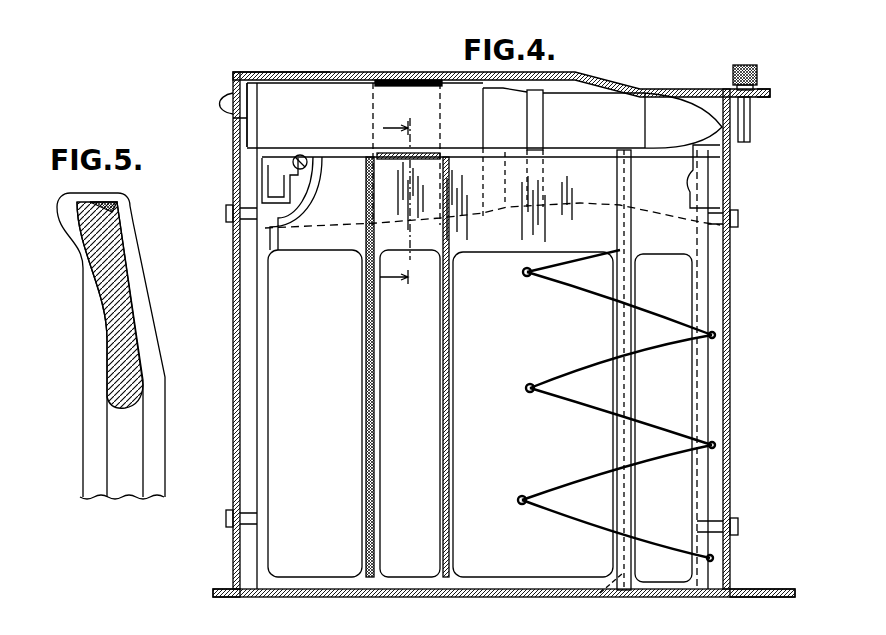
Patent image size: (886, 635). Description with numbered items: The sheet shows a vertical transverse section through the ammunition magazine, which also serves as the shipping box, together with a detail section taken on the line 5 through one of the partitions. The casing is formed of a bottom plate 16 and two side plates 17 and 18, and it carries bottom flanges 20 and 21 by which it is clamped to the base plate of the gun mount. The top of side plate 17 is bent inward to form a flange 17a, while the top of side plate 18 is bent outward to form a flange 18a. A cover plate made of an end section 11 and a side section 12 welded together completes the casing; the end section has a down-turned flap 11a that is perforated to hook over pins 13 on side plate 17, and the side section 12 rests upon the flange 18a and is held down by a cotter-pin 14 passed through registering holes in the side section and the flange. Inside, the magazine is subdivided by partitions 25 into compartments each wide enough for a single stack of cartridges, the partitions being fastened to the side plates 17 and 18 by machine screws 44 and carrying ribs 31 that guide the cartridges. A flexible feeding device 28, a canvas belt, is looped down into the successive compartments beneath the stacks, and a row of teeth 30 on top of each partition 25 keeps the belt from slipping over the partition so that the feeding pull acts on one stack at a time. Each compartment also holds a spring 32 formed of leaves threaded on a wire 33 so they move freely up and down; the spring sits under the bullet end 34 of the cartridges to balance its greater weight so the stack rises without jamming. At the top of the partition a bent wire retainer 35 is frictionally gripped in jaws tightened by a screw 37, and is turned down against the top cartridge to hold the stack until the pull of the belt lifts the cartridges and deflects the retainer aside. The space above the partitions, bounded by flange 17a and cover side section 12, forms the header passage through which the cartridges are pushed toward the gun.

In FIG. 4, the section line 5- 5 is at (406, 184).
In FIG. 4, the end section of cover plate 11 is at (359, 75).
In FIG. 4, the down turned flap 11a is at (232, 118).
In FIG. 4, the side section of cover plate 12 is at (712, 88).
In FIG. 4, the pins 13 is at (224, 102).
In FIG. 4, the cotter-pin 14 is at (751, 132).
In FIG. 4, the bottom plate 16 is at (480, 598).
In FIG. 4, the side plate 17 is at (237, 410).
In FIG. 4, the flange 17a is at (284, 75).
In FIG. 4, the side plate 18 is at (736, 392).
In FIG. 4, the flange 18a is at (764, 102).
In FIG. 4, the bottom flange 20 is at (747, 592).
In FIG. 4, the bottom flange 21 is at (218, 589).
In FIG. 4, the partitions or separators 25 is at (331, 245).
In FIG. 5, the partitions or separators 25 is at (125, 373).
In FIG. 4, the flexible feeding device 28 is at (406, 80).
In FIG. 4, the teeth 30 is at (406, 162).
In FIG. 5, the teeth 30 is at (120, 201).
In FIG. 4, the ribs 31 is at (368, 432).
In FIG. 4, the spring 32 is at (578, 293).
In FIG. 4, the wire 33 is at (702, 282).
In FIG. 4, the bullet end 34 is at (601, 100).
In FIG. 4, the bent wire retainer 35 is at (280, 172).
In FIG. 4, the screw 37 is at (320, 175).
In FIG. 4, the machine screws 44 is at (230, 218).